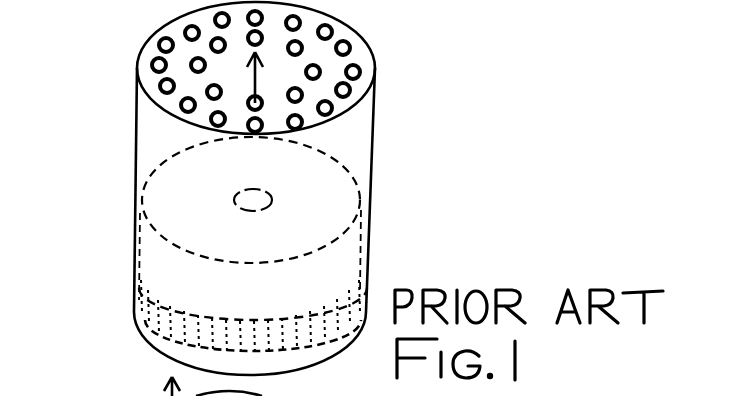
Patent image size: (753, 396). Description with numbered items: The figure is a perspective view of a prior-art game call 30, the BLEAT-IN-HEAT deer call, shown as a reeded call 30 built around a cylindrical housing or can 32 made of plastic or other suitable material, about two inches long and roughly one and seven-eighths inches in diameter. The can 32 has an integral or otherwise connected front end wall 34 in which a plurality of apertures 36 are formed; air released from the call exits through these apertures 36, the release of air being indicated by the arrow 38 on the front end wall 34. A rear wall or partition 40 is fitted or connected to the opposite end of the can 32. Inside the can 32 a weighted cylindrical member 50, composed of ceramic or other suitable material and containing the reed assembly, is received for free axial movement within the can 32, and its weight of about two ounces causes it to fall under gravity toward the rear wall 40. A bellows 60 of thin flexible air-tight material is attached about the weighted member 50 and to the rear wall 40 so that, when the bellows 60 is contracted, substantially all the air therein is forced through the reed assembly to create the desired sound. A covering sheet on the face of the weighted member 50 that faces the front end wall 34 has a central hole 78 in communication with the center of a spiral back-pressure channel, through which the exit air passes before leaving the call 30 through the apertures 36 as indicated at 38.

The reeded call 30 is at (403, 69).
The cylindrical housing or can 32 is at (372, 143).
The front end wall 34 is at (152, 38).
The apertures 36 is at (213, 118).
The release of air 38 is at (253, 77).
The rear wall or partition 40 is at (173, 358).
The weighted cylindrical member 50 is at (352, 256).
The bellows 60 is at (367, 285).
The hole 78 is at (272, 203).